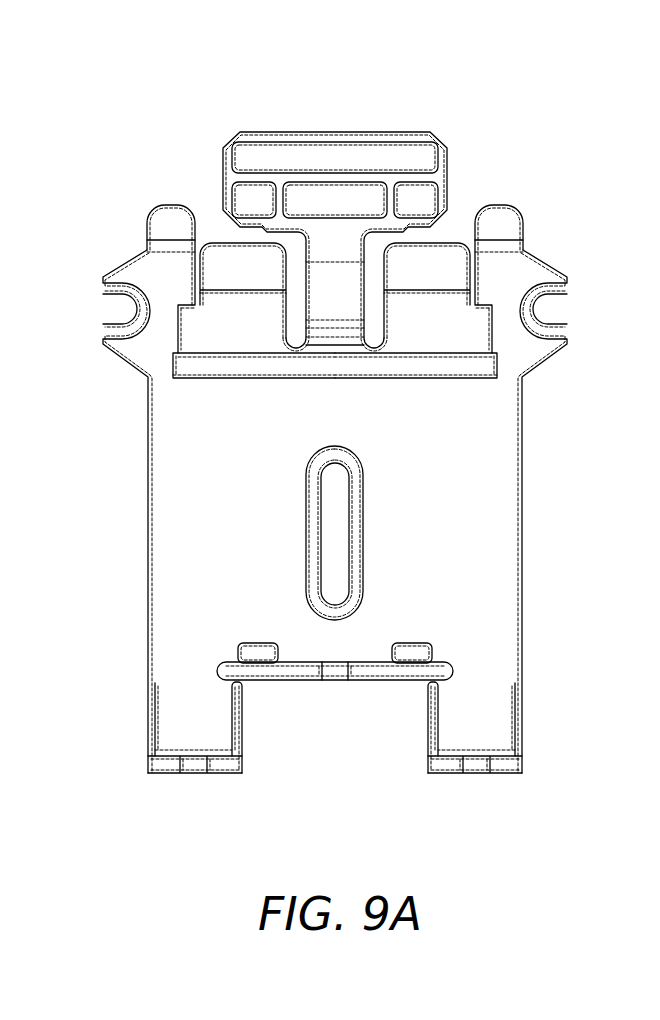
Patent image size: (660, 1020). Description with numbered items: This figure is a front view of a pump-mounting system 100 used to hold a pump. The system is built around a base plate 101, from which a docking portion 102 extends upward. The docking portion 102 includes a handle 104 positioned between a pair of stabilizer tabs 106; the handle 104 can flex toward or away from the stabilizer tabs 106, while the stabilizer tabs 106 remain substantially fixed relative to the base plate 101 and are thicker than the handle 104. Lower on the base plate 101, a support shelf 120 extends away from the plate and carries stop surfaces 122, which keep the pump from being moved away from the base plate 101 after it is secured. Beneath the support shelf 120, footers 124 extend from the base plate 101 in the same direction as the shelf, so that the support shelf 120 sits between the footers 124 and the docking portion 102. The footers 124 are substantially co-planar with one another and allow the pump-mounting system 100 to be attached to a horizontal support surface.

The pump-mounting system 100 is at (494, 131).
The base plate 101 is at (192, 542).
The docking portion 102 is at (208, 141).
The handle 104 is at (318, 133).
The stabilizer tabs 106 is at (225, 287).
The support shelf 120 is at (367, 668).
The stop surfaces 122 is at (410, 645).
The footers 124 is at (165, 766).